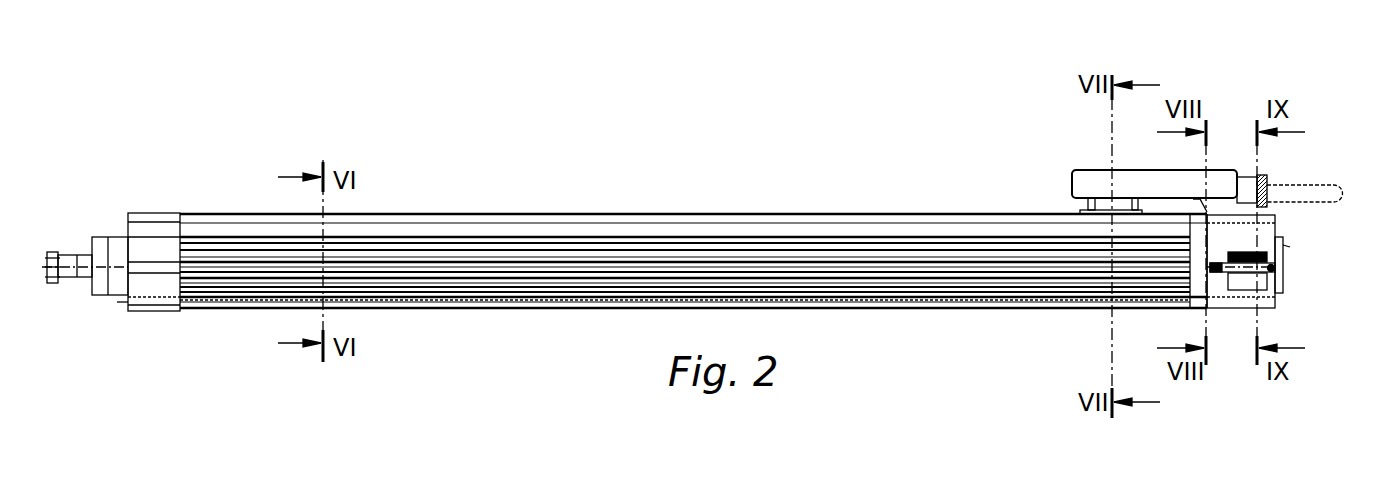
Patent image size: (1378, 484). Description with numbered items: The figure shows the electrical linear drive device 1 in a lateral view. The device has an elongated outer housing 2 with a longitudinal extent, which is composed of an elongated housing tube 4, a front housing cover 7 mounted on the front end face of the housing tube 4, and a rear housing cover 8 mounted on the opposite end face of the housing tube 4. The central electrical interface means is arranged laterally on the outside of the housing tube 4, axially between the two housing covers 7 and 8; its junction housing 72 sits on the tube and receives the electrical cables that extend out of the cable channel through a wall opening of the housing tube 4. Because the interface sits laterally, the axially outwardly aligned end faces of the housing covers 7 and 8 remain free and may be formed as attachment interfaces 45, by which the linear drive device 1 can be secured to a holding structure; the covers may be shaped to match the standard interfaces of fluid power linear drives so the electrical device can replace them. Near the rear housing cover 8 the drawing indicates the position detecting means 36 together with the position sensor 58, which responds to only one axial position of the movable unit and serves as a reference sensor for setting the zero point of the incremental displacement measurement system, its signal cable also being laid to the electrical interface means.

The electrical linear drive device 1 is at (903, 190).
The outer housing 2 is at (918, 310).
The housing tube 4 is at (567, 303).
The front housing cover 7 is at (154, 238).
The rear housing cover 8 is at (1265, 300).
The attachment interfaces 45 is at (120, 306).
The junction housing 72 is at (1091, 178).
The position detecting means 36 is at (1249, 335).
The position sensor 58 is at (1238, 268).